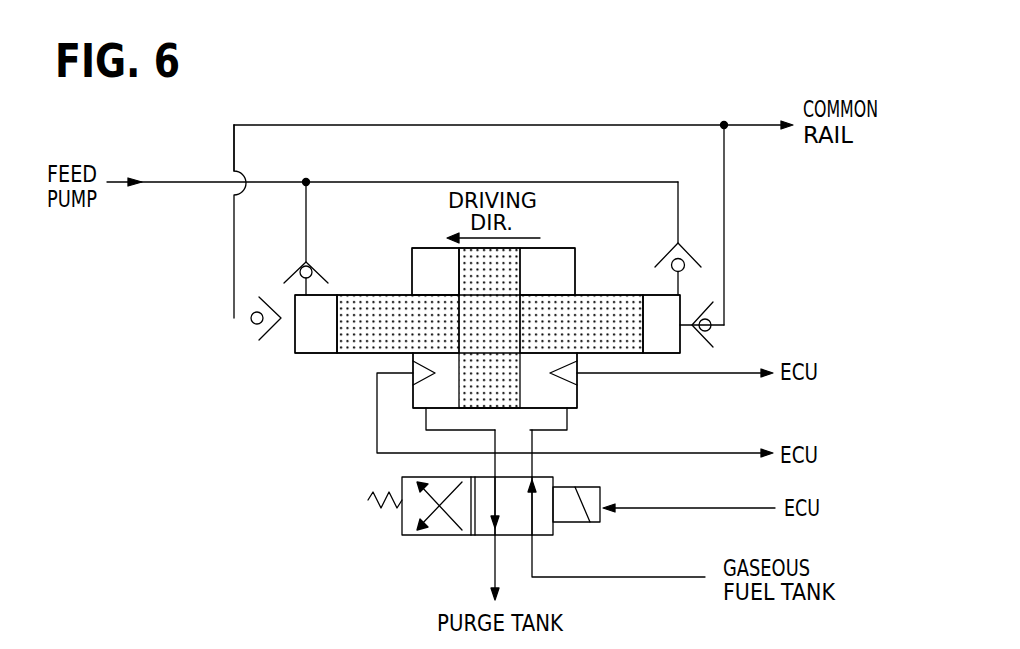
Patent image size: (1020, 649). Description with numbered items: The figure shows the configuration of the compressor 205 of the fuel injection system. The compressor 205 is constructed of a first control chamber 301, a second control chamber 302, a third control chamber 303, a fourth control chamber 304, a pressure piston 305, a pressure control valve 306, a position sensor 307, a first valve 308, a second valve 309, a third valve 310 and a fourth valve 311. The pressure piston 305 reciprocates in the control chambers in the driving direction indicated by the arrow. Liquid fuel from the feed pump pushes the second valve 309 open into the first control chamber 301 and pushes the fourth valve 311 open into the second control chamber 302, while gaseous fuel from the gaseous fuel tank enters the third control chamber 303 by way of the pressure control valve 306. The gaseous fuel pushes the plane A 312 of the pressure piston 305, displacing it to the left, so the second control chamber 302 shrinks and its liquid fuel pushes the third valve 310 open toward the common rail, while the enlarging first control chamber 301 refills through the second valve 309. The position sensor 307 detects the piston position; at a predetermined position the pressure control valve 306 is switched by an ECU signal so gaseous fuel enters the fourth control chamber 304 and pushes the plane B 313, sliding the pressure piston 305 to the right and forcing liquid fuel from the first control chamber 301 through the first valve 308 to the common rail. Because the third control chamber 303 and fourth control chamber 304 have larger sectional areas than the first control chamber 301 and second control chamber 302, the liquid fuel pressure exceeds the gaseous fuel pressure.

The compressor 205 is at (278, 291).
The first control chamber 301 is at (662, 305).
The second control chamber 302 is at (320, 347).
The third control chamber 303 is at (553, 270).
The fourth control chamber 304 is at (428, 275).
The pressure piston 305 is at (600, 305).
The pressure control valve 306 is at (467, 525).
The position sensor 307 is at (417, 378).
The first valve 308 is at (717, 335).
The second valve 309 is at (687, 253).
The third valve 310 is at (252, 328).
The fourth valve 311 is at (300, 262).
The plane A 312 is at (522, 258).
The plane B 313 is at (456, 265).